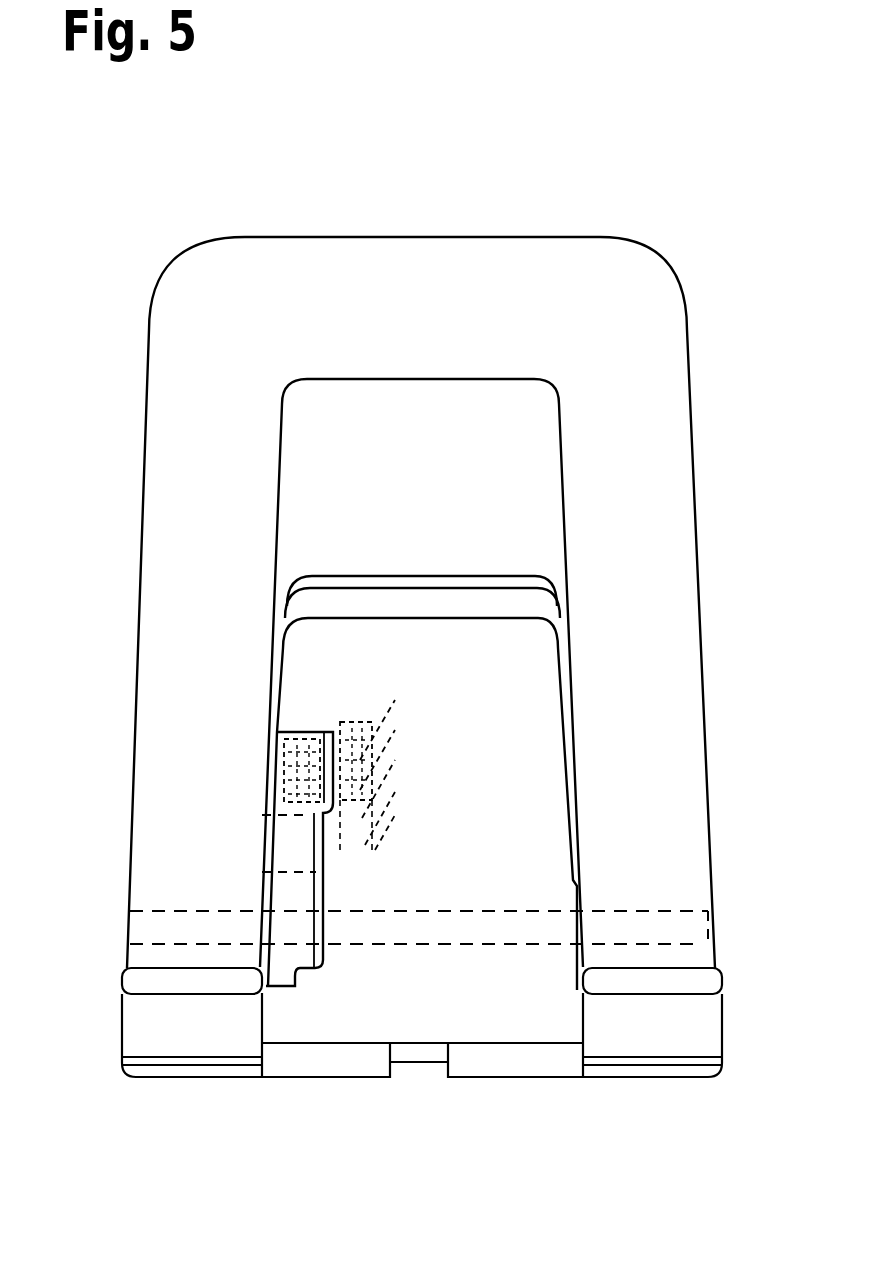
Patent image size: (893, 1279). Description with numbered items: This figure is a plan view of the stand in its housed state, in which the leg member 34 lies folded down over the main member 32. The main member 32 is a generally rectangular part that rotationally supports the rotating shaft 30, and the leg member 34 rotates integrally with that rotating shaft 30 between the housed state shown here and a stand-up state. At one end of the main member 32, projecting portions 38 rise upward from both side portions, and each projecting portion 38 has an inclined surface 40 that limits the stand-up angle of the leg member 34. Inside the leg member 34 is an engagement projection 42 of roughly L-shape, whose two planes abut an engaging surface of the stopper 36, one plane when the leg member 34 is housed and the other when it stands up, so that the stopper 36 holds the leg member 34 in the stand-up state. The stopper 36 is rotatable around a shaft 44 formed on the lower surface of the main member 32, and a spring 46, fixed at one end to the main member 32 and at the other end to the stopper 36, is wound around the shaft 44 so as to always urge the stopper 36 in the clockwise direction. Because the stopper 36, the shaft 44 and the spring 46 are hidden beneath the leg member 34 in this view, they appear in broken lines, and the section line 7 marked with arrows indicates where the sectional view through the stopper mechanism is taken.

The section line for FIG. 7 is at (283, 221).
The rotating shaft 30 is at (503, 908).
The main member 32 is at (441, 640).
The leg member 34 is at (431, 262).
The stopper 36 is at (285, 840).
The projecting portion 38 is at (168, 1040).
The inclined surface 40 is at (183, 980).
The engagement projection 42 is at (269, 843).
The shaft 44 is at (360, 806).
The spring 46 is at (346, 737).